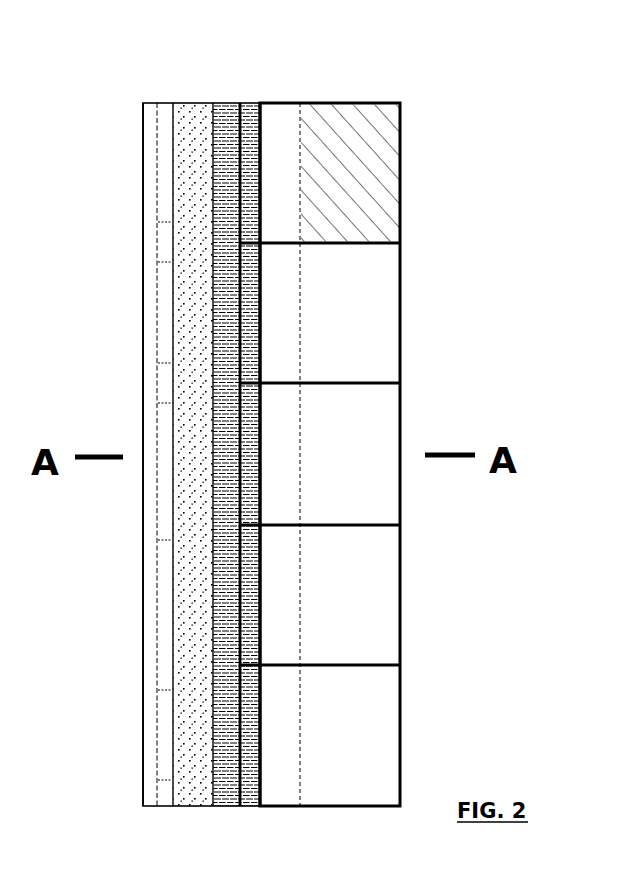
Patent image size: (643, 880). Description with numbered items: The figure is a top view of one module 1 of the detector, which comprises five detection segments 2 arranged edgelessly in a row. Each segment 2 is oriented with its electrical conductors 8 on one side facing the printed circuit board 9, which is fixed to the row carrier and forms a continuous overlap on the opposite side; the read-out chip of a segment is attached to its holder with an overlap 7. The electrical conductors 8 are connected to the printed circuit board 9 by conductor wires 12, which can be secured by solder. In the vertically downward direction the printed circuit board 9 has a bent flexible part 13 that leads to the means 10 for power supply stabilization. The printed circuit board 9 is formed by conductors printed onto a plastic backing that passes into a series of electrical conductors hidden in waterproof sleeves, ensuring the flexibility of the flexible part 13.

The module 1 is at (497, 238).
The detection segment 2 is at (401, 171).
The overlap 7 is at (350, 173).
The electrical conductors 8 is at (248, 147).
The printed circuit board 9 is at (192, 103).
The means for power supply stabilization 10 is at (160, 300).
The conductor wires 12 is at (232, 124).
The flexible part 13 is at (141, 390).